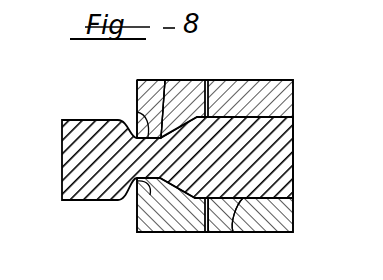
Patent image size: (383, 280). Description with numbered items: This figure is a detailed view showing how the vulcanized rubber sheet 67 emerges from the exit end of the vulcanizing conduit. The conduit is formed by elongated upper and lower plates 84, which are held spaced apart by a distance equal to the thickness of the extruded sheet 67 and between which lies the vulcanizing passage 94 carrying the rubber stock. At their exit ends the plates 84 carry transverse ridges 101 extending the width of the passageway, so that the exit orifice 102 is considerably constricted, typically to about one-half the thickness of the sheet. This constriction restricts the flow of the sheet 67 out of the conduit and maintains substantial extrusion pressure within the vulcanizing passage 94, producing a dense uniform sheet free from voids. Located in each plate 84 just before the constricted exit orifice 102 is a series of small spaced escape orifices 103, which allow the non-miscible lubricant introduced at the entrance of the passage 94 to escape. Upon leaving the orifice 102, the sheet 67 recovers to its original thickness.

The vulcanized rubber sheet 67 is at (91, 118).
The transverse ridges 101 is at (137, 112).
The exit orifice 102 is at (164, 81).
The escape orifices 103 is at (207, 79).
The upper and lower plates 84 is at (262, 80).
The vulcanizing passage 94 is at (240, 212).